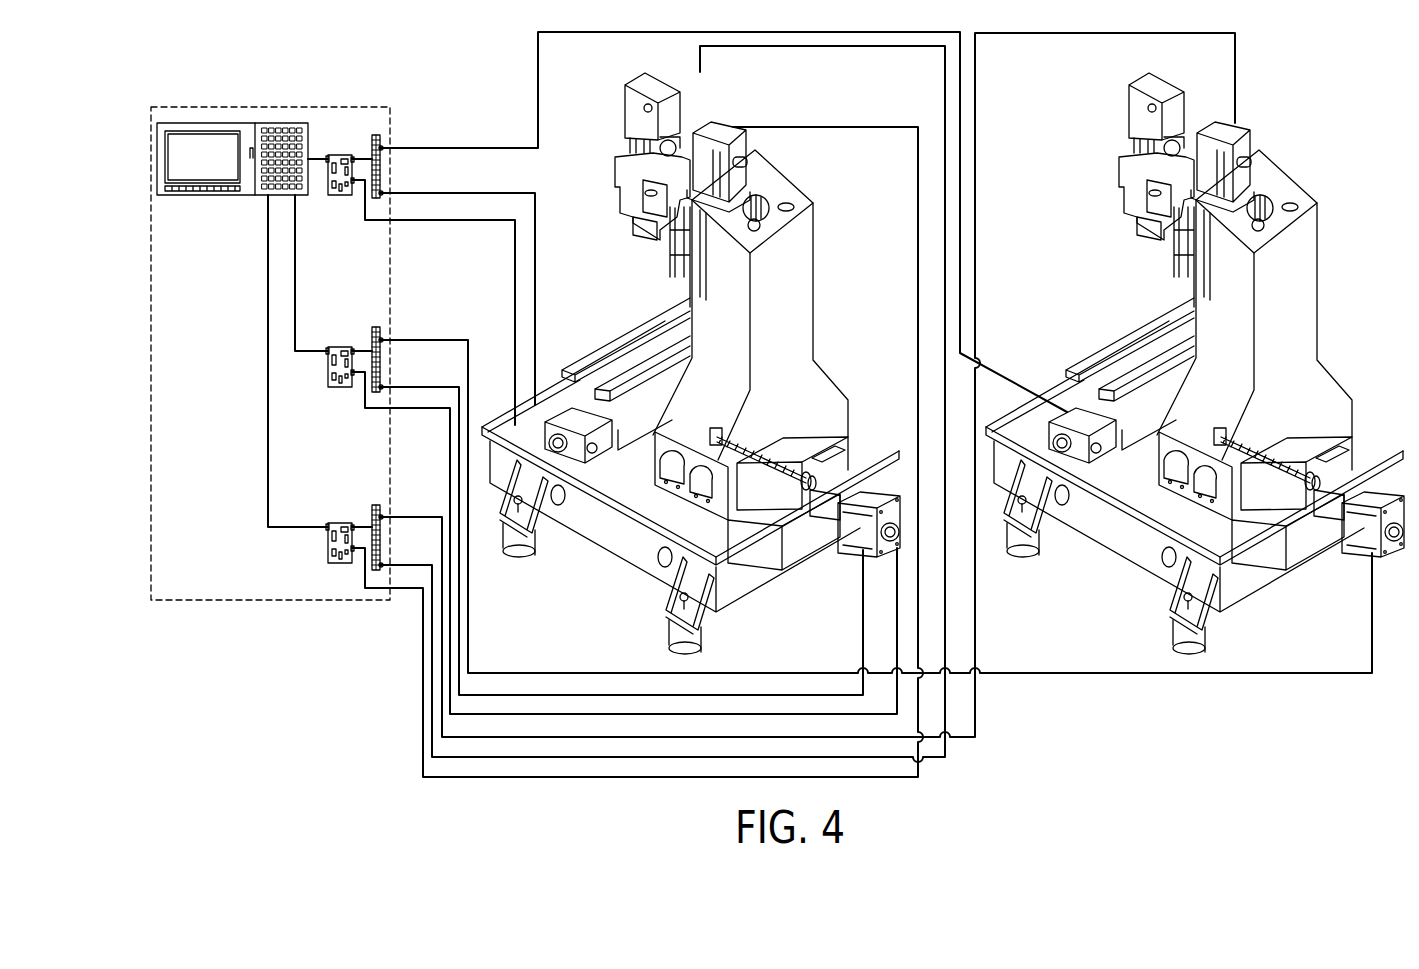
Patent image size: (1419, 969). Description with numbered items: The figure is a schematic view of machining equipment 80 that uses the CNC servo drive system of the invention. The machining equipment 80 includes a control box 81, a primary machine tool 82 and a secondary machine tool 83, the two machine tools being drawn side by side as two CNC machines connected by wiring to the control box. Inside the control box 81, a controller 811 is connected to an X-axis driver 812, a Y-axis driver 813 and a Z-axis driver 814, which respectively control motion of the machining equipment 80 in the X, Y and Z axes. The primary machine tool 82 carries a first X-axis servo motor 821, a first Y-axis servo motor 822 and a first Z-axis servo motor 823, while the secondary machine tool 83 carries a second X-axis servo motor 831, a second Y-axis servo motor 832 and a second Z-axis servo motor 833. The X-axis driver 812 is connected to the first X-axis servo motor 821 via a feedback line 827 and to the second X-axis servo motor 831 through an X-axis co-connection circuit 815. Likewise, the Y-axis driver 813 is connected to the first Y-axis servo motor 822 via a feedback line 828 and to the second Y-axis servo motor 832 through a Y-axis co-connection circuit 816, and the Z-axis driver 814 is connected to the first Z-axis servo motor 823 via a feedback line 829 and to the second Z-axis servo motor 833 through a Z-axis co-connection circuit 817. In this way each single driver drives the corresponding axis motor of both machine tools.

The machining equipment 80 is at (428, 104).
The control box 81 is at (197, 106).
The controller 811 is at (272, 123).
The X-axis driver 812 is at (338, 196).
The Y-axis driver 813 is at (333, 388).
The Z-axis driver 814 is at (333, 564).
The X-axis co-connection circuit 815 is at (372, 137).
The Y-axis co-connection circuit 816 is at (372, 328).
The Z-axis co-connection circuit 817 is at (372, 506).
The feedback line 827 is at (372, 222).
The feedback line 828 is at (375, 410).
The feedback line 829 is at (375, 590).
The primary machine tool 82 is at (691, 363).
The first X-axis servo motor 821 is at (578, 465).
The first Y-axis servo motor 822 is at (877, 497).
The first Z-axis servo motor 823 is at (747, 152).
The secondary machine tool 83 is at (1195, 349).
The second X-axis servo motor 831 is at (1088, 470).
The second Y-axis servo motor 832 is at (1386, 500).
The second Z-axis servo motor 833 is at (1252, 152).